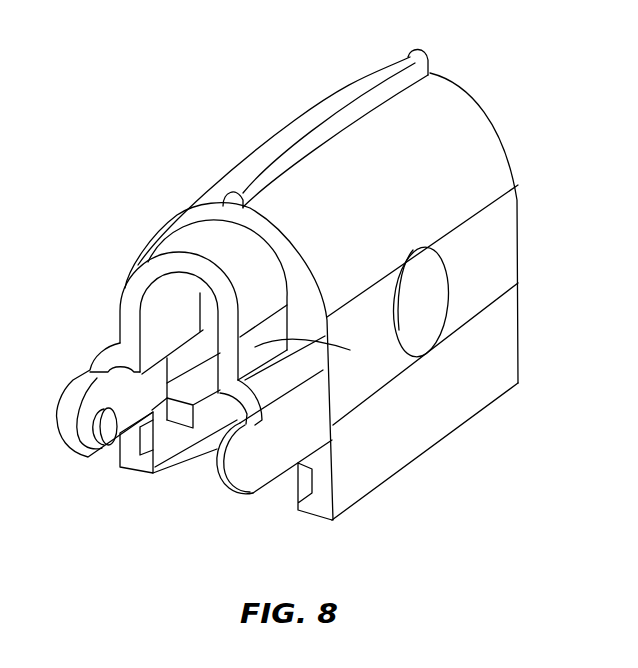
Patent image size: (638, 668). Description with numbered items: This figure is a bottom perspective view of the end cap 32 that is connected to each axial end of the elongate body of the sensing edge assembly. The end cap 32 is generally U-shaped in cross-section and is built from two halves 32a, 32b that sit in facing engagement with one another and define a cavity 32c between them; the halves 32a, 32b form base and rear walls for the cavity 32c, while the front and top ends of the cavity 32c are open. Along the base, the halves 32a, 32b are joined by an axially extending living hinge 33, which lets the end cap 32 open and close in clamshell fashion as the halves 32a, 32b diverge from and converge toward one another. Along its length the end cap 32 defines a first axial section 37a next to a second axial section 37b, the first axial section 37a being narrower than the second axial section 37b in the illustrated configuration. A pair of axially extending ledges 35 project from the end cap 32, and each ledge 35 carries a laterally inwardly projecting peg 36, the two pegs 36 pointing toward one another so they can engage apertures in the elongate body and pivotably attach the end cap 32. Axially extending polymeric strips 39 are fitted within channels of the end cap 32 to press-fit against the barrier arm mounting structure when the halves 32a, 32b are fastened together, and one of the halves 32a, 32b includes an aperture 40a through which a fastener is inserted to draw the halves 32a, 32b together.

The end cap 32 is at (154, 157).
The first half of the end cap 32a is at (288, 138).
The second half of the end cap 32b is at (495, 244).
The cavity 32c is at (205, 340).
The living hinge 33 is at (412, 58).
The ledge 35 is at (57, 420).
The peg 36 is at (107, 430).
The first axial section 37a is at (334, 345).
The second axial section 37b is at (502, 344).
The polymeric strip 39 is at (145, 440).
The aperture 40a is at (428, 310).